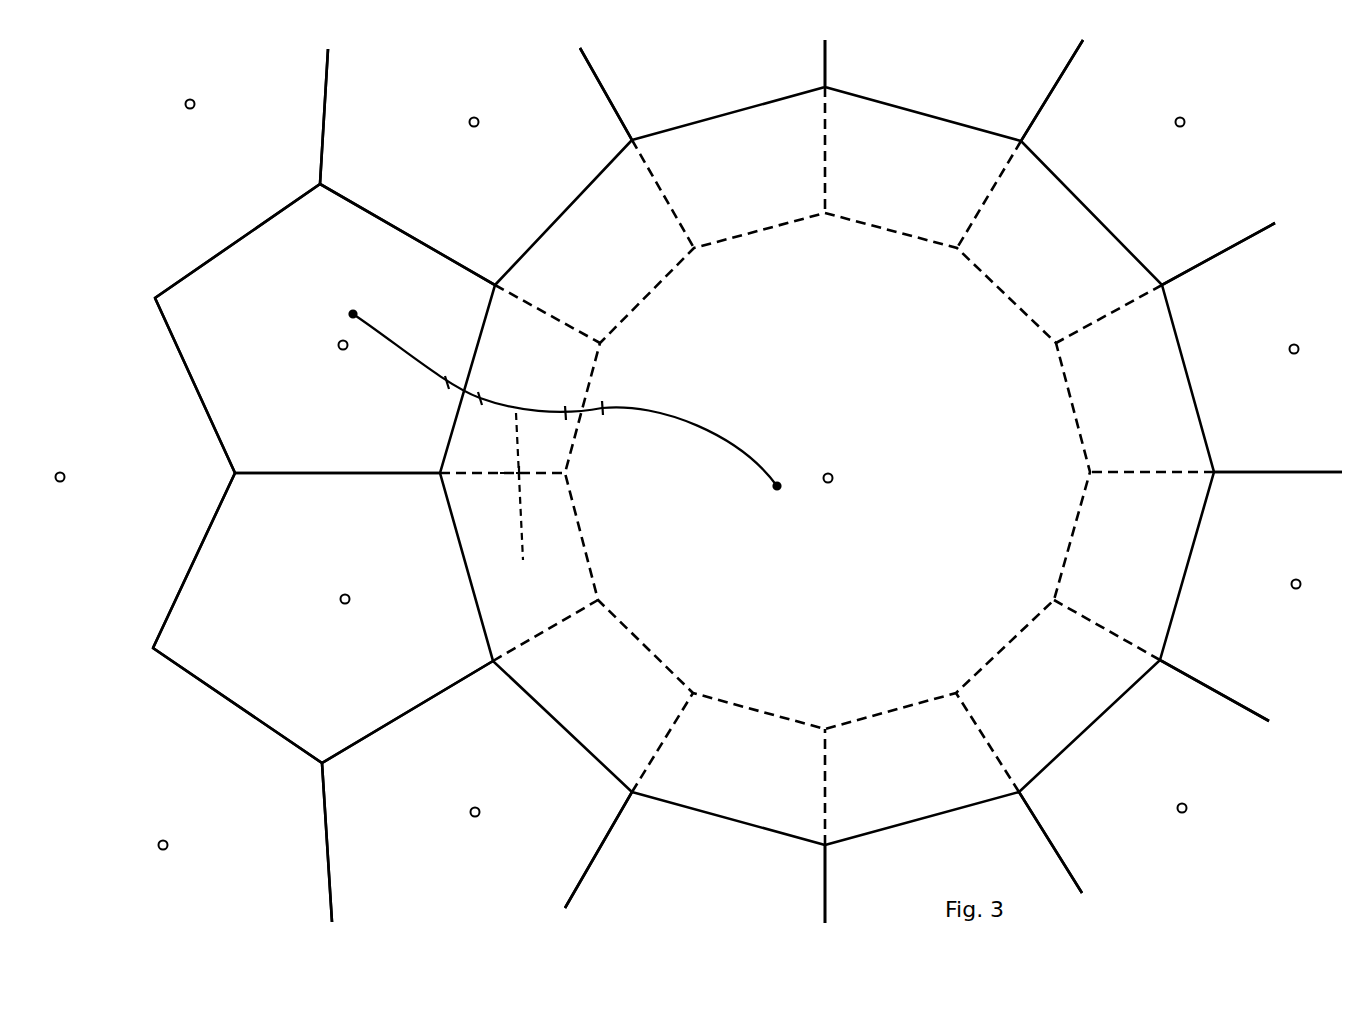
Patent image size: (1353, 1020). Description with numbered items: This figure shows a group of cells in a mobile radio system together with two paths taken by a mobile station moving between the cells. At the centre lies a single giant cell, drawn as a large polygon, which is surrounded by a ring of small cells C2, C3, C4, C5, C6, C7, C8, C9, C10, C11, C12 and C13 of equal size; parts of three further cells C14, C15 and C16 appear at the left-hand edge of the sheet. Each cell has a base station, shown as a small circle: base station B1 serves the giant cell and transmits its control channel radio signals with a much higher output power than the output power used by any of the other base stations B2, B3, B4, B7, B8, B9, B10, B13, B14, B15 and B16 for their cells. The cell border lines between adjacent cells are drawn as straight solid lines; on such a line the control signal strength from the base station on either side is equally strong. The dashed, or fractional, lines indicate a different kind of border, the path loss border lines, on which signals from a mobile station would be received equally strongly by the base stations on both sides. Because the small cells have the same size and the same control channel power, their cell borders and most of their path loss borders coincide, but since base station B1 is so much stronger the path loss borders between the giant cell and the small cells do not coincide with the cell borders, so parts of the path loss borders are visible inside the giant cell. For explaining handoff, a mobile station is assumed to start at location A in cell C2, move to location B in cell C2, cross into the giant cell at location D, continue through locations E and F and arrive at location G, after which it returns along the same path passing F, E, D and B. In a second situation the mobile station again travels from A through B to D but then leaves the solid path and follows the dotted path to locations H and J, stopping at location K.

The small cell C2 is at (302, 427).
The small cell C3 is at (319, 705).
The small cell C4 is at (402, 832).
The small cell C5 is at (672, 845).
The small cell C6 is at (999, 845).
The small cell C7 is at (1110, 795).
The small cell C8 is at (1232, 637).
The small cell C9 is at (1267, 440).
The small cell C10 is at (1196, 230).
The small cell C11 is at (1019, 110).
The small cell C12 is at (694, 110).
The small cell C13 is at (504, 219).
The cell C14 is at (256, 175).
The cell C15 is at (169, 528).
The cell C16 is at (287, 893).
The base station B1 is at (829, 496).
The base station B2 is at (324, 346).
The base station B3 is at (367, 599).
The base station B4 is at (495, 812).
The base station B7 is at (1203, 808).
The base station B8 is at (1275, 584).
The base station B9 is at (1272, 349).
The base station B10 is at (1208, 120).
The base station B13 is at (502, 122).
The base station B14 is at (219, 104).
The base station B15 is at (89, 477).
The base station B16 is at (191, 845).
The location A is at (560, 386).
The location B is at (447, 368).
The location D is at (487, 386).
The location E is at (562, 400).
The location F is at (603, 397).
The location G is at (776, 501).
The location H is at (499, 459).
The location J is at (500, 485).
The location K is at (521, 498).